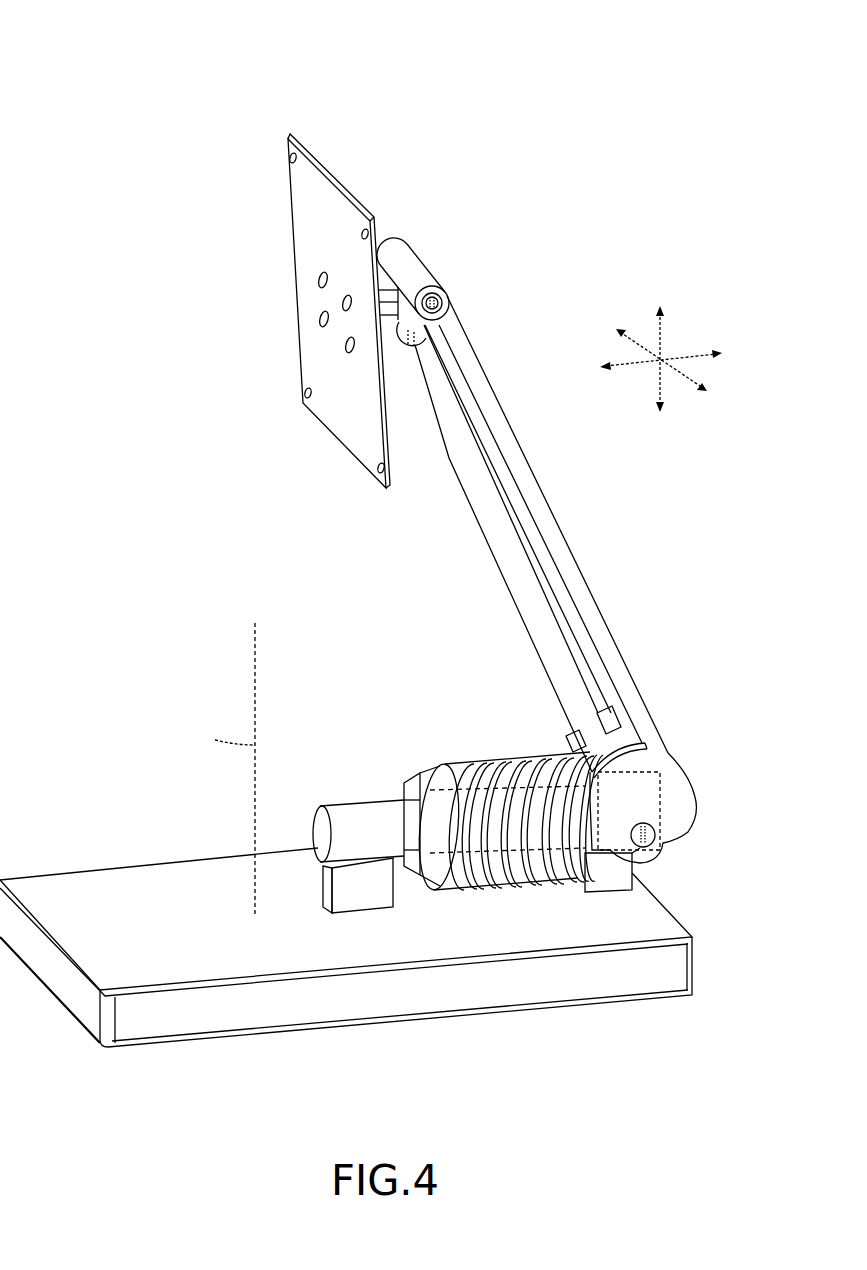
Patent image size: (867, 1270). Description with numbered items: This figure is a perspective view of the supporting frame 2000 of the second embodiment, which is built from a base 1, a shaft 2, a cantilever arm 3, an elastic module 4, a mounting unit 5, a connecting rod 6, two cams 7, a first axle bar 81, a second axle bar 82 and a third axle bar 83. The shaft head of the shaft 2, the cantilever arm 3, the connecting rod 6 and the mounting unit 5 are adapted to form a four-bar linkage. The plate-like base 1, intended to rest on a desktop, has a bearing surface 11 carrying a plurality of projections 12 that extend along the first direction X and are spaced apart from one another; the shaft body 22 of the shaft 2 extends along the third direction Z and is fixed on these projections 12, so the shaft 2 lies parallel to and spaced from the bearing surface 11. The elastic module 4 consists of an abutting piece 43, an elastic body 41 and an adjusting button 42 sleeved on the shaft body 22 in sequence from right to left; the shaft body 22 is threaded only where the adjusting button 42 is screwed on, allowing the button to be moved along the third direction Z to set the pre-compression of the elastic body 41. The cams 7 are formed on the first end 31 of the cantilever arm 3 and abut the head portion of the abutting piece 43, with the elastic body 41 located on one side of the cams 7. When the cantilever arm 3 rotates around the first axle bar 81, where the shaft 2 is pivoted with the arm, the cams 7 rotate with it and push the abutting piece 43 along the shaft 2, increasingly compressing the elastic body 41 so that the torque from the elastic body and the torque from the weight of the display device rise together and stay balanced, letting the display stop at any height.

The supporting frame 2000 is at (135, 31).
The base 1 is at (346, 922).
The bearing surface 11 is at (193, 868).
The projections 12 is at (378, 886).
The shaft 2 is at (374, 844).
The shaft body 22 is at (390, 842).
The cantilever arm 3 is at (572, 578).
The first end 31 is at (683, 793).
The elastic module 4 is at (440, 688).
The elastic body 41 is at (490, 768).
The adjusting button 42 is at (413, 783).
The abutting piece 43 is at (568, 752).
The mounting unit 5 is at (316, 156).
The connecting rod 6 is at (512, 573).
The cams 7 is at (570, 742).
The first axle bar 81 is at (655, 848).
The second axle bar 82 is at (440, 301).
The third axle bar 83 is at (418, 346).